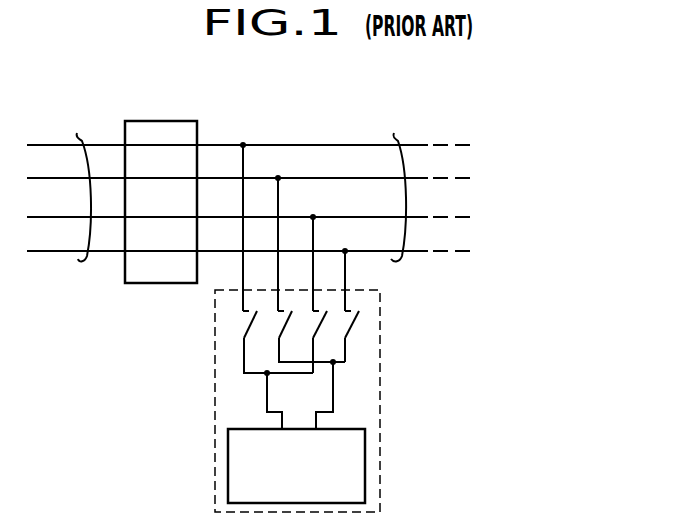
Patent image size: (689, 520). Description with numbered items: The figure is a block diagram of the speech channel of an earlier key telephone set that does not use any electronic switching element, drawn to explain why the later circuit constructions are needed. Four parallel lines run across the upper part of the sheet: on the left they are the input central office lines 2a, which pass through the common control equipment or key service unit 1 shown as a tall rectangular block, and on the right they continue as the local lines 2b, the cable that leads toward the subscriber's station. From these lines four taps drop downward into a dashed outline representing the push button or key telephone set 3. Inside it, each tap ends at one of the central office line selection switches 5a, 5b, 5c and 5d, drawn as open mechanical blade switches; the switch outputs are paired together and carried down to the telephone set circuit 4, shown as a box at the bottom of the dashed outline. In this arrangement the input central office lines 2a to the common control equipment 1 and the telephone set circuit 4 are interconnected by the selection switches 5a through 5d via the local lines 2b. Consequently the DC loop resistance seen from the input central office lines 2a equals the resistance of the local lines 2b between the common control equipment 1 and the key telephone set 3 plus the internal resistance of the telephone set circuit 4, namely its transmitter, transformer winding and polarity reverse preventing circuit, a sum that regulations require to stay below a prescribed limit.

The common control equipment 1 is at (171, 121).
The input central office lines 2a is at (77, 133).
The local lines 2b is at (394, 133).
The key telephone set 3 is at (381, 327).
The telephone set circuit 4 is at (228, 463).
The central office line selection switch 5a is at (252, 322).
The central office line selection switch 5b is at (287, 322).
The central office line selection switch 5c is at (322, 322).
The central office line selection switch 5d is at (354, 322).